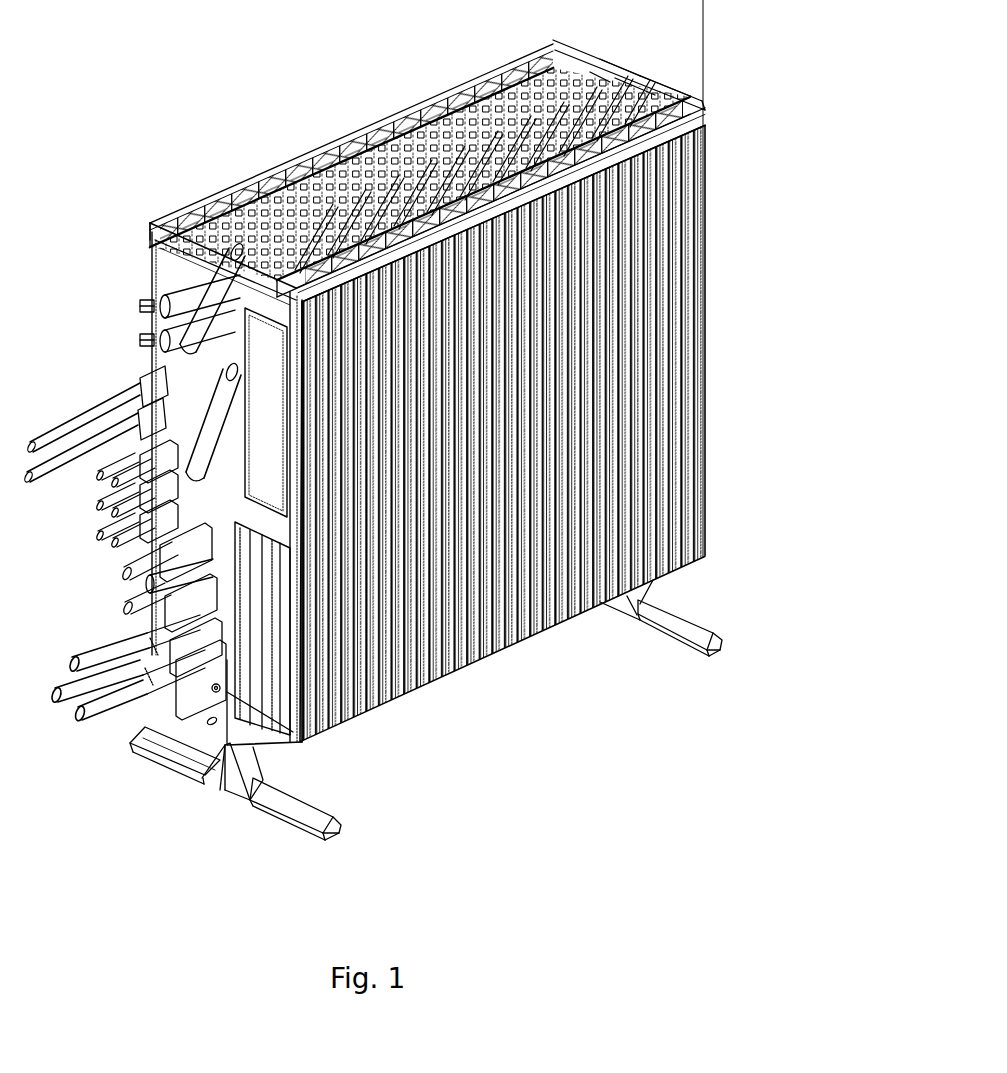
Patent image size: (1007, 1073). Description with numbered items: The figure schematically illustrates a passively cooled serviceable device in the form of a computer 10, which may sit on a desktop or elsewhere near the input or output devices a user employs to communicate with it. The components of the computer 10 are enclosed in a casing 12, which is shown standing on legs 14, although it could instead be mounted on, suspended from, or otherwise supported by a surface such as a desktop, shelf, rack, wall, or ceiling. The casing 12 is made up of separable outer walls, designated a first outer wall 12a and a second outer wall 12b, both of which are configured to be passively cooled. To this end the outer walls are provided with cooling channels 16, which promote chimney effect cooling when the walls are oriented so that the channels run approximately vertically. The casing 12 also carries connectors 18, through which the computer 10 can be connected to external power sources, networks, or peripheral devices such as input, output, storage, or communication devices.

The computer 10 is at (168, 76).
The casing 12 is at (730, 296).
The first outer wall 12a is at (187, 237).
The second outer wall 12b is at (632, 103).
The legs 14 is at (170, 758).
The cooling channels 16 is at (310, 160).
The connectors 18 is at (222, 450).